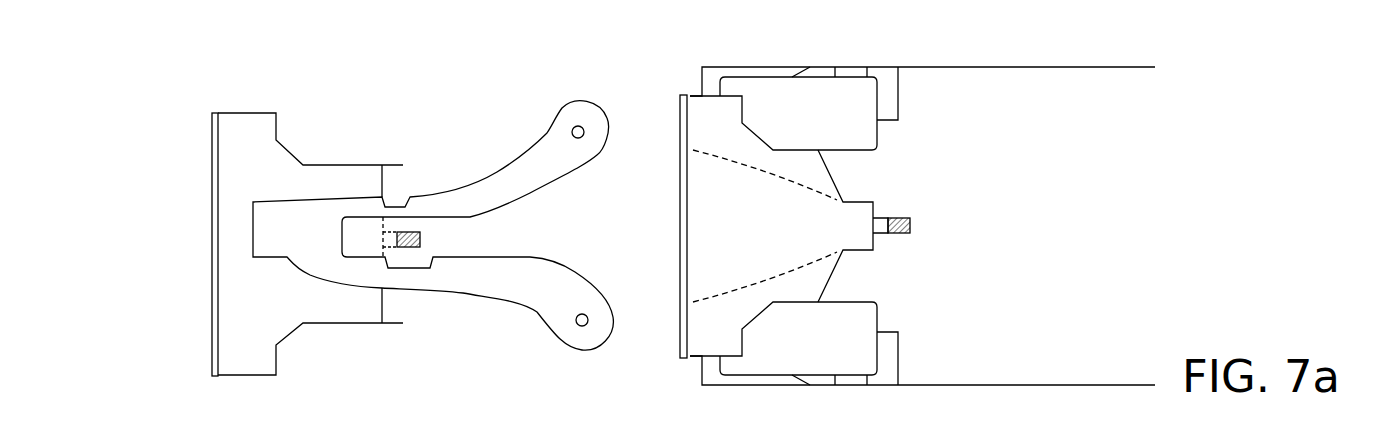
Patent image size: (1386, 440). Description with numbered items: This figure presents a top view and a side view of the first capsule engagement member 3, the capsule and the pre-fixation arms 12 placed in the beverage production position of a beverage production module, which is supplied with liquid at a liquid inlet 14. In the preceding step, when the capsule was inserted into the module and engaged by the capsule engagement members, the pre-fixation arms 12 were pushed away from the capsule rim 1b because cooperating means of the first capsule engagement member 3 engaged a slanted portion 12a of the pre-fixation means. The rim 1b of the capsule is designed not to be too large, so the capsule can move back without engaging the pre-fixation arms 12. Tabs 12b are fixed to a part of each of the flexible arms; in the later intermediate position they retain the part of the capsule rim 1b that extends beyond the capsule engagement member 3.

The capsule rim 1b is at (207, 138).
The first capsule engagement member 3 is at (287, 152).
The pre-fixation arms 12 is at (493, 187).
The liquid inlet 14 is at (420, 240).
The slanted portion 12a is at (752, 75).
The tabs 12b is at (852, 75).